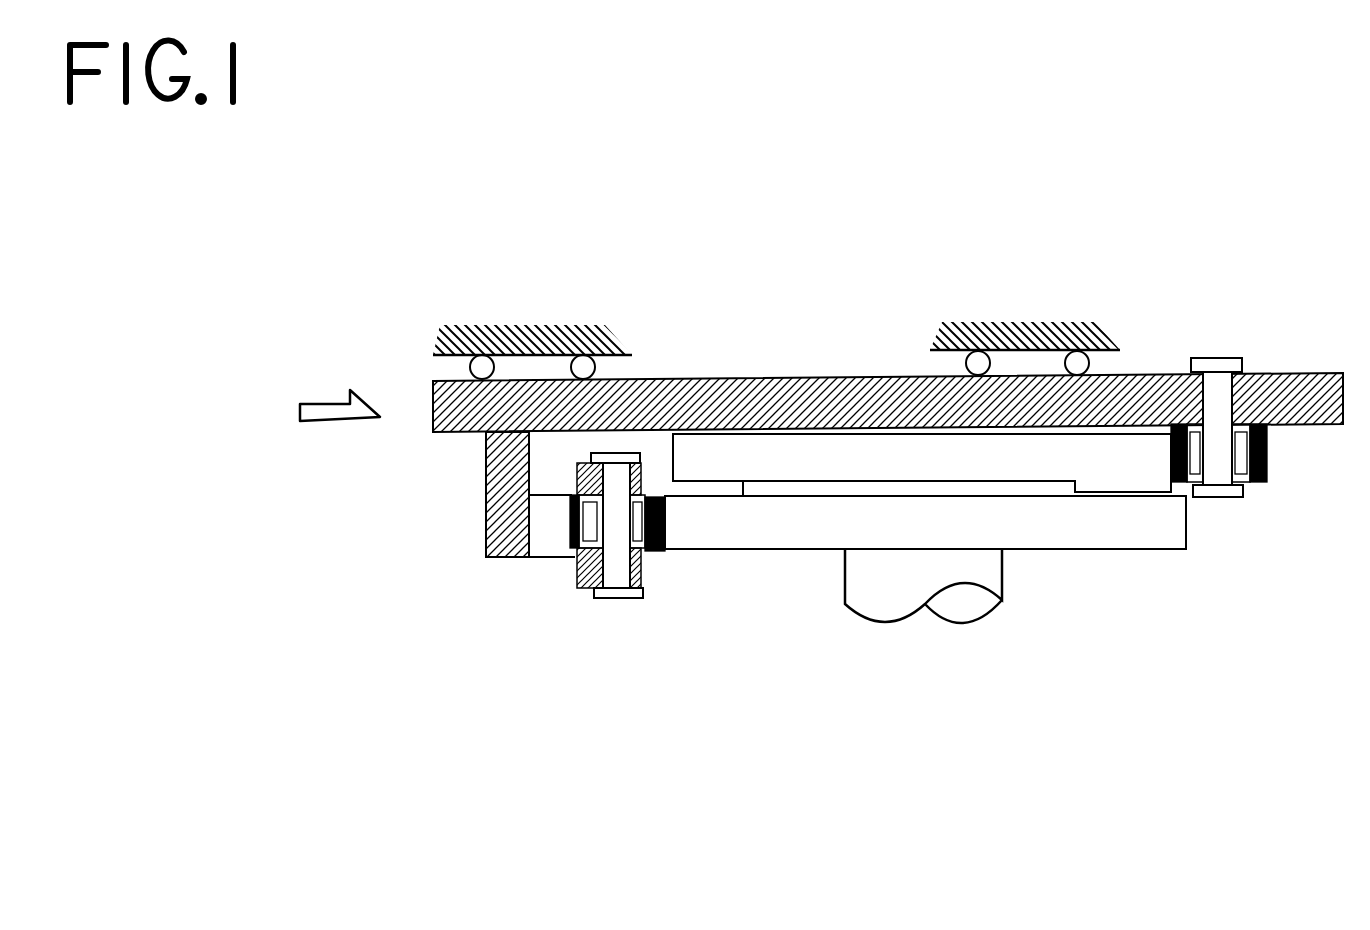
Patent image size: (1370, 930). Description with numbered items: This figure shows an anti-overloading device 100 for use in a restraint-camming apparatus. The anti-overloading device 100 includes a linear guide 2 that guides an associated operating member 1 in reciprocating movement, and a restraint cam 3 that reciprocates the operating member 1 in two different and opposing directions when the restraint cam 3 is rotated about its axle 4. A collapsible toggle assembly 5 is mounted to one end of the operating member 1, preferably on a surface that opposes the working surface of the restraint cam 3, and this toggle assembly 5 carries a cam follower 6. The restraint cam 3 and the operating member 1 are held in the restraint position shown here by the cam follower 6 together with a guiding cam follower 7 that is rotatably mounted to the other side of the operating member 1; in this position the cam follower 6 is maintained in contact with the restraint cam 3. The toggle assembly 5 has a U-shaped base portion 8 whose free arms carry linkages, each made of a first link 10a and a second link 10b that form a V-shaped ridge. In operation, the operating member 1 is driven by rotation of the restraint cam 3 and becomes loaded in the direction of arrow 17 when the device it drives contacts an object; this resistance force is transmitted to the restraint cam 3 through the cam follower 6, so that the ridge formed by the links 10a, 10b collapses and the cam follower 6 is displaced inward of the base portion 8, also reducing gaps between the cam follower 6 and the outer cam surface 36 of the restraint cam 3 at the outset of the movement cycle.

The operating member 1 is at (728, 377).
The linear guide 2 is at (1028, 365).
The restraint cam 3 is at (1077, 522).
The axle 4 is at (985, 577).
The collapsible toggle assembly 5 is at (554, 603).
The cam follower 6 is at (660, 548).
The guiding cam follower 7 is at (1267, 483).
The base portion 8 is at (548, 545).
The first link 10a is at (586, 580).
The second link 10b is at (575, 563).
The arrow 17 is at (337, 422).
The outer cam surface 36 is at (665, 530).
The anti-overloading device 100 is at (686, 568).